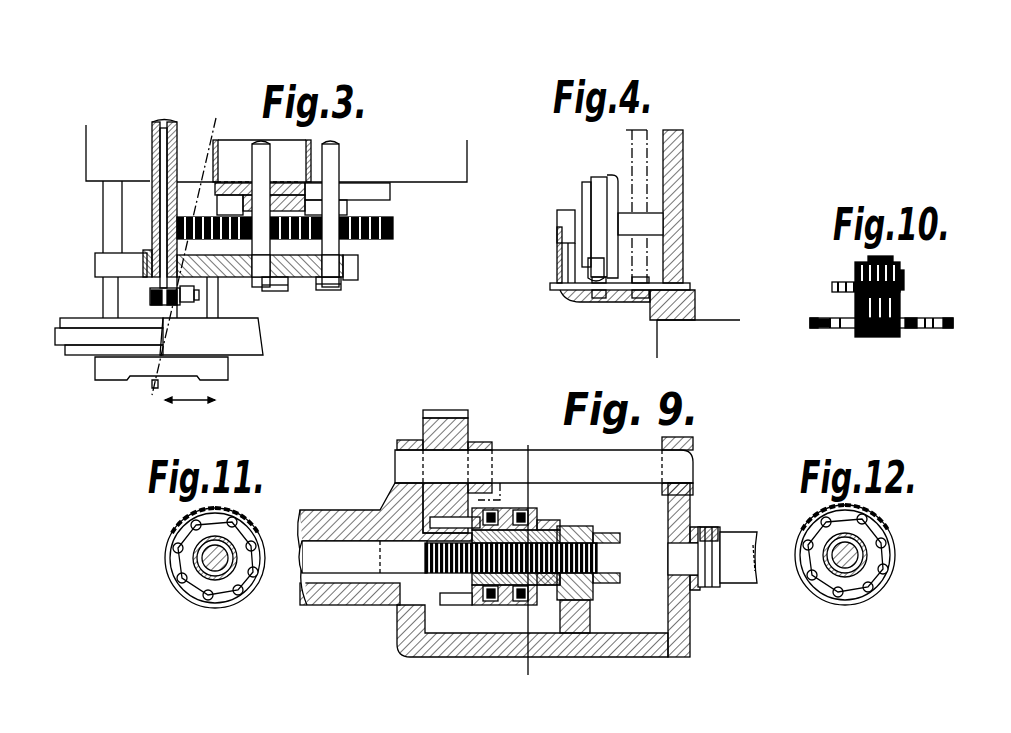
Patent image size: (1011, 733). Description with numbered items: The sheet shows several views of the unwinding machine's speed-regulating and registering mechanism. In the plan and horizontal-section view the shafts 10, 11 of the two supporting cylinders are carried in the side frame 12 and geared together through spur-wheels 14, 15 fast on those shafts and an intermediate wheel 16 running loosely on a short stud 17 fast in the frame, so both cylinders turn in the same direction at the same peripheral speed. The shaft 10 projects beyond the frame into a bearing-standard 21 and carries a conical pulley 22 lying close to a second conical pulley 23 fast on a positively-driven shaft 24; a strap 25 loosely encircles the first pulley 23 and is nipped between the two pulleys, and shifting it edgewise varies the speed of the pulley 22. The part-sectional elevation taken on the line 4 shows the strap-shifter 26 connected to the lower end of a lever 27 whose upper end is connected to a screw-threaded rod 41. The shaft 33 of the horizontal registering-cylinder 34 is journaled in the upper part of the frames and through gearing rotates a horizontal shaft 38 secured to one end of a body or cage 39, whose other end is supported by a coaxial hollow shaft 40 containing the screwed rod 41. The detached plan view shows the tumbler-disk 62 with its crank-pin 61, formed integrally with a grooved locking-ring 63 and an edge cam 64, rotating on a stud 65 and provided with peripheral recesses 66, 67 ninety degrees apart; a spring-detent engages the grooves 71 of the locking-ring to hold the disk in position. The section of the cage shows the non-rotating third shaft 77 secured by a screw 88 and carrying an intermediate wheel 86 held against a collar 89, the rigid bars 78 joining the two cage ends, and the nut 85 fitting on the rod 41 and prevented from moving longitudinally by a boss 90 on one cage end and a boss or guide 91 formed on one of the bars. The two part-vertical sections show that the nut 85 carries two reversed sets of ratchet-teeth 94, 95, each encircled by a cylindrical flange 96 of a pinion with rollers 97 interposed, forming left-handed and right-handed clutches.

In FIG. 3, the section line 4 4 is at (180, 258).
In FIG. 3, the shaft 10 is at (218, 298).
In FIG. 9, the shaft 11 is at (533, 558).
In FIG. 3, the side frame 12 is at (348, 271).
In FIG. 4, the side frame 12 is at (683, 184).
In FIG. 9, the side frame 12 is at (481, 677).
In FIG. 3, the spur-wheel 14 is at (263, 275).
In FIG. 3, the spur-wheel 15 is at (393, 230).
In FIG. 3, the intermediate wheel 16 is at (300, 262).
In FIG. 3, the short shaft or stud 17 is at (275, 275).
In FIG. 3, the bearing-standard 21 is at (220, 375).
In FIG. 4, the bearing-standard 21 is at (557, 245).
In FIG. 3, the conical pulley 22 is at (211, 336).
In FIG. 3, the conical pulley 23 is at (68, 324).
In FIG. 4, the conical pulley 23 is at (608, 180).
In FIG. 3, the shaft 24 is at (112, 291).
In FIG. 4, the shaft 24 is at (652, 225).
In FIG. 3, the strap 25 is at (68, 337).
In FIG. 4, the strap 25 is at (595, 187).
In FIG. 4, the strap-shifter 26 is at (592, 268).
In FIG. 4, the lever 27 is at (630, 152).
In FIG. 3, the shaft 33 is at (260, 148).
In FIG. 3, the registering-cylinder 34 is at (296, 161).
In FIG. 9, the horizontal shaft 38 is at (745, 566).
In FIG. 9, the body or cage 39 is at (405, 497).
In FIG. 9, the hollow shaft 40 is at (358, 600).
In FIG. 3, the screw-threaded rod 41 is at (162, 196).
In FIG. 9, the screw-threaded rod 41 is at (363, 557).
In FIG. 10, the crank-pin 61 is at (900, 307).
In FIG. 10, the tumbler-disk 62 is at (953, 325).
In FIG. 10, the grooved locking-ring 63 is at (833, 287).
In FIG. 10, the edge cam 64 is at (905, 278).
In FIG. 10, the stud 65 is at (878, 337).
In FIG. 10, the peripheral recess 66 is at (832, 320).
In FIG. 10, the peripheral recess 67 is at (922, 329).
In FIG. 10, the grooves 71 is at (870, 268).
In FIG. 9, the third short shaft 77 is at (544, 466).
In FIG. 9, the rigid bars 78 is at (668, 645).
In FIG. 11, the nut 85 is at (214, 578).
In FIG. 12, the nut 85 is at (862, 548).
In FIG. 9, the intermediate wheel 86 is at (432, 432).
In FIG. 9, the screw 88 is at (680, 466).
In FIG. 9, the collar 89 is at (480, 442).
In FIG. 9, the boss 90 is at (450, 585).
In FIG. 9, the boss or guide 91 is at (590, 535).
In FIG. 9, the ratchet-teeth 94 is at (530, 605).
In FIG. 11, the ratchet-teeth 94 is at (180, 562).
In FIG. 9, the ratchet-teeth 95 is at (470, 640).
In FIG. 12, the ratchet-teeth 95 is at (880, 588).
In FIG. 11, the cylindrical flange 96 is at (258, 574).
In FIG. 12, the cylindrical flange 96 is at (895, 568).
In FIG. 11, the rollers 97 is at (240, 594).
In FIG. 12, the rollers 97 is at (838, 594).